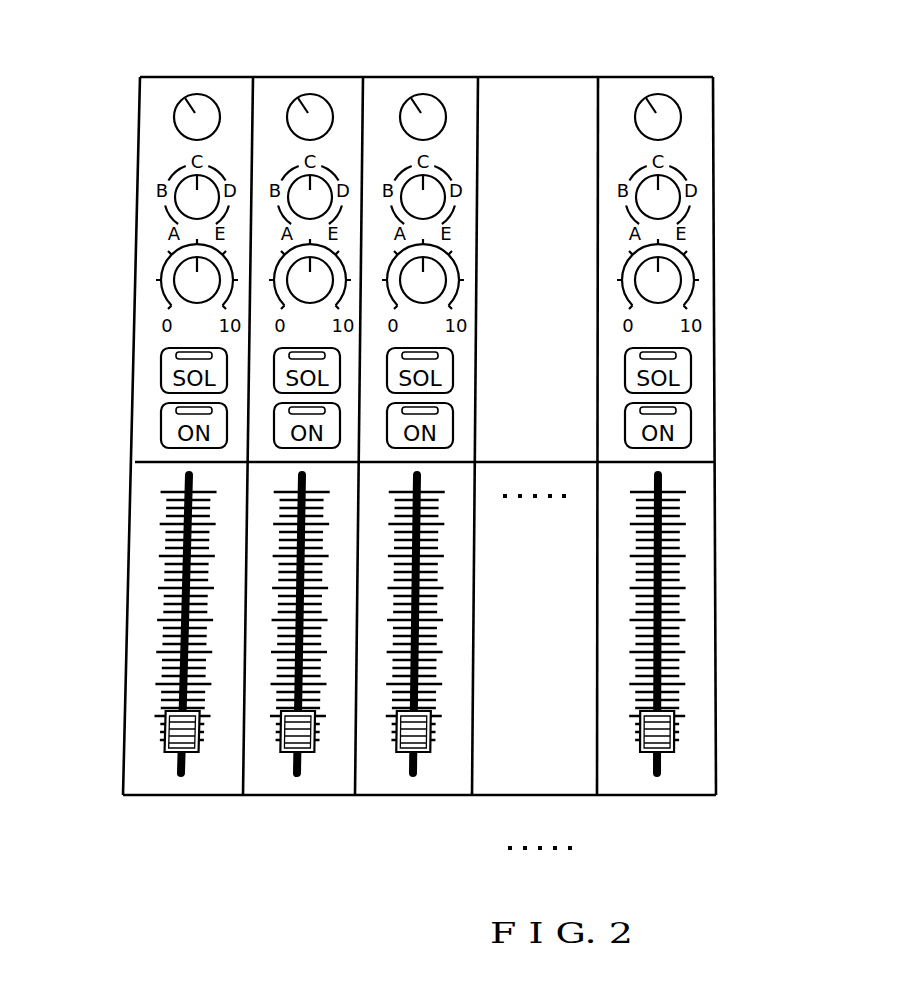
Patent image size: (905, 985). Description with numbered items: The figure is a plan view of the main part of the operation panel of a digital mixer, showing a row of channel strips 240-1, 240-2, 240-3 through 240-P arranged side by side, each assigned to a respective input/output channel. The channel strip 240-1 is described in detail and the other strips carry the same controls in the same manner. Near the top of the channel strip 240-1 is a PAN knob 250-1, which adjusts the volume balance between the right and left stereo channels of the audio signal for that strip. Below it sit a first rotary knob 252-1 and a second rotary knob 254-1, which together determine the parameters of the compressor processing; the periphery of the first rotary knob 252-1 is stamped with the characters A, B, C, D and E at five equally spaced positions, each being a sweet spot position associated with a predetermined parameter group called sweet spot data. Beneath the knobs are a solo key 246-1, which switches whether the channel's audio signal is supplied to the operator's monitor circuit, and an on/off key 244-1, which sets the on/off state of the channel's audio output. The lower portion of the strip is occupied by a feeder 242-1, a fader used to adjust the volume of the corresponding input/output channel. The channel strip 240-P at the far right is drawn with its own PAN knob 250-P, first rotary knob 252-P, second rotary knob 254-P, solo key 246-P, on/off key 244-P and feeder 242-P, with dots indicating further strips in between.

The channel strip 240-1 is at (145, 448).
The channel strip 240-2 is at (335, 869).
The channel strip 240-3 is at (457, 869).
The channel strip 240-P is at (658, 439).
The feeder 242-1 is at (165, 733).
The feeder 242-P is at (640, 720).
The on/off key 244-1 is at (162, 428).
The on/off key 244-P is at (628, 428).
The solo key 246-1 is at (162, 372).
The solo key 246-P is at (628, 373).
The PAN knob 250-1 is at (182, 110).
The PAN knob 250-P is at (676, 103).
The first rotary knob 252-1 is at (188, 184).
The first rotary knob 252-P is at (676, 172).
The second rotary knob 254-1 is at (188, 272).
The second rotary knob 254-P is at (695, 258).